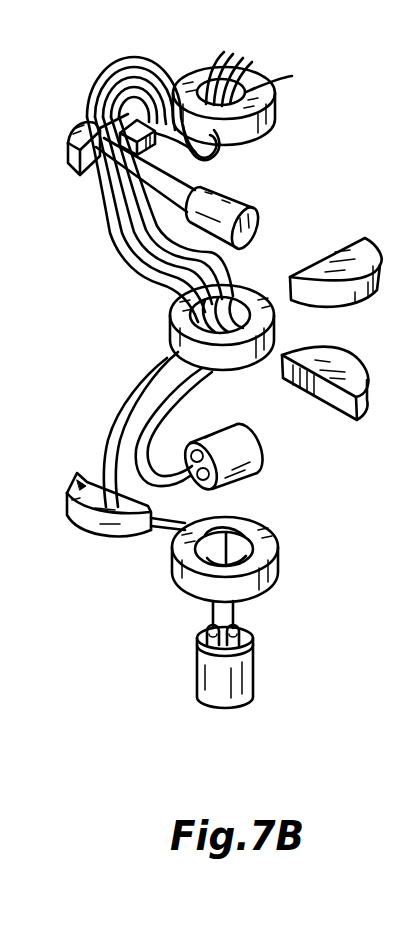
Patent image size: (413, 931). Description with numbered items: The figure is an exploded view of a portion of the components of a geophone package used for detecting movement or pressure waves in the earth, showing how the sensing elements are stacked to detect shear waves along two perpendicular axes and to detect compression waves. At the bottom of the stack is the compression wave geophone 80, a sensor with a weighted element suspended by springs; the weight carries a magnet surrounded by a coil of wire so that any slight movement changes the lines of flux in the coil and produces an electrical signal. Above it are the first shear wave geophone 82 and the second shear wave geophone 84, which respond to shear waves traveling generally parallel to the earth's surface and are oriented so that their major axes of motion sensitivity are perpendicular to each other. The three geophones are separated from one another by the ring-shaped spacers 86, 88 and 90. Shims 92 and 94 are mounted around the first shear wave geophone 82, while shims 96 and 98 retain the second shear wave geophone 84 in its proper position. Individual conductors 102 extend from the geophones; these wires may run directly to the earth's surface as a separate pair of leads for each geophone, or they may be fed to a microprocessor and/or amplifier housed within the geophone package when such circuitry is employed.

The compression wave geophone 80 is at (252, 674).
The first shear wave geophone 82 is at (258, 472).
The second shear wave geophone 84 is at (262, 231).
The spacer 86 is at (278, 576).
The spacer 88 is at (178, 342).
The spacer 90 is at (276, 120).
The shim 92 is at (97, 540).
The shim 94 is at (366, 397).
The shim 96 is at (70, 140).
The shim 98 is at (350, 252).
The individual conductors 102 is at (302, 30).